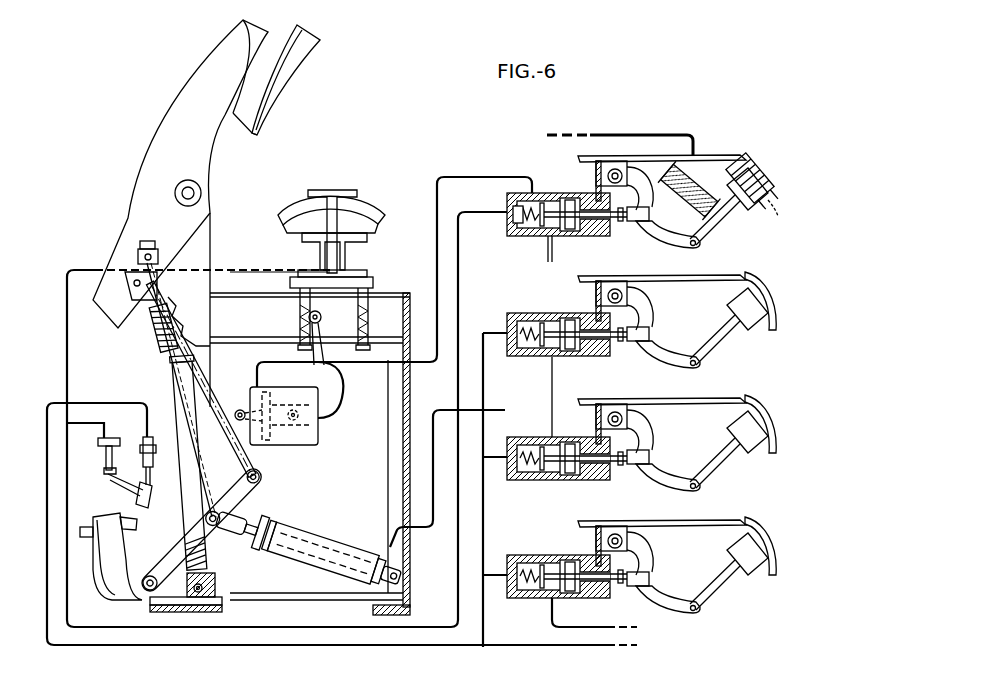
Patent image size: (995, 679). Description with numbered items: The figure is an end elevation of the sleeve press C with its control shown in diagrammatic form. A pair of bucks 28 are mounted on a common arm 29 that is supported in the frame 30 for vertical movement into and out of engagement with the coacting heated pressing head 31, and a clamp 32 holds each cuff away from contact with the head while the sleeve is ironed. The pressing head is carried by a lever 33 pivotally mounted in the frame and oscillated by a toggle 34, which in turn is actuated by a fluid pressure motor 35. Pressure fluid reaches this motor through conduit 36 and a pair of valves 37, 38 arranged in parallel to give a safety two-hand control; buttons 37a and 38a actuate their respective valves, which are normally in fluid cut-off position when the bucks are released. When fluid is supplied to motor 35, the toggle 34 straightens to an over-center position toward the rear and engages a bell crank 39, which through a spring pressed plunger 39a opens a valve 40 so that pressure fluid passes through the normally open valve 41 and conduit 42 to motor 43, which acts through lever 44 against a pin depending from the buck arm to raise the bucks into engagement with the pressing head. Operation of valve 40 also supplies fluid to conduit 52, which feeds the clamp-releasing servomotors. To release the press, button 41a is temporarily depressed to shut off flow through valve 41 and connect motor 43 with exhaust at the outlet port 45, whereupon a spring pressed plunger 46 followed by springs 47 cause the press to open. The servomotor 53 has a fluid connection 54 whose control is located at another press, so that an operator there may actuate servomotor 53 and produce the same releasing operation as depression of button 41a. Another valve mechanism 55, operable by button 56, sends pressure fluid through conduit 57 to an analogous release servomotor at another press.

The bucks 28 is at (288, 212).
The common arm 29 is at (353, 248).
The frame 30 is at (352, 268).
The pressing head 31 is at (258, 108).
The clamp 32 is at (338, 192).
The lever 33 is at (157, 118).
The toggle 34 is at (258, 463).
The fluid pressure motor 35 is at (318, 533).
The conduit 36 is at (528, 648).
The valve 37 is at (637, 356).
The button 37a is at (775, 300).
The valve 38 is at (637, 444).
The button 38a is at (773, 420).
The bell crank 39 is at (108, 438).
The spring pressed plunger 39a is at (138, 497).
The valve 40 is at (136, 430).
The normally open valve 41 is at (546, 182).
The button 41a is at (757, 155).
The conduit 42 is at (430, 176).
The motor 43 is at (320, 435).
The lever 44 is at (341, 380).
The outlet port 45 is at (548, 240).
The spring pressed plunger 46 is at (130, 548).
The springs 47 is at (150, 345).
The conduit 52 is at (67, 277).
The servomotor 53 is at (668, 165).
The fluid connection 54 is at (615, 134).
The valve mechanism 55 is at (553, 553).
The button 56 is at (764, 522).
The conduit 57 is at (598, 636).
The sleeve press C is at (305, 158).